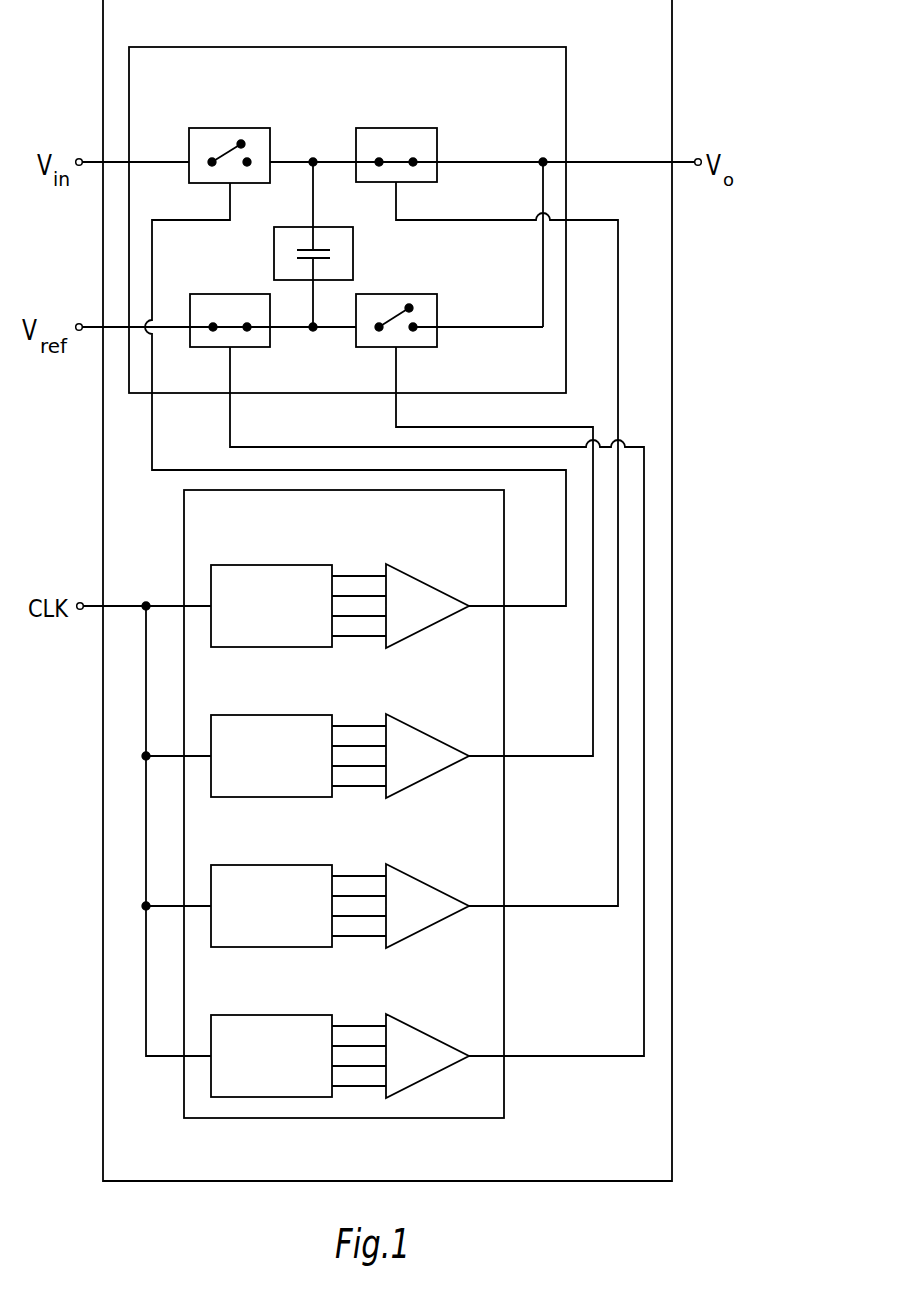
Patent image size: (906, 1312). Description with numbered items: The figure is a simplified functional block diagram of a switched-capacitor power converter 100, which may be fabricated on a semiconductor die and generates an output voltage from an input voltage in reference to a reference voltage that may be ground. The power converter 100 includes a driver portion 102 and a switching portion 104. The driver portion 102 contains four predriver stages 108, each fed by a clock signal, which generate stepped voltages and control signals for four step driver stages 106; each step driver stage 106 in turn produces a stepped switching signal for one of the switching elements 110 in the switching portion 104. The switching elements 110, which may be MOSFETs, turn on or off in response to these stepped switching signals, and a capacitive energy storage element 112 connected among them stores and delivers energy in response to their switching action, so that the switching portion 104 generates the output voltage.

The power converter 100 is at (672, 17).
The driver portion 102 is at (504, 510).
The switching portion 104 is at (566, 47).
The step driver stage 106 is at (425, 584).
The predriver stage 108 is at (332, 565).
The switching element 110 is at (270, 128).
The energy storage element 112 is at (353, 227).